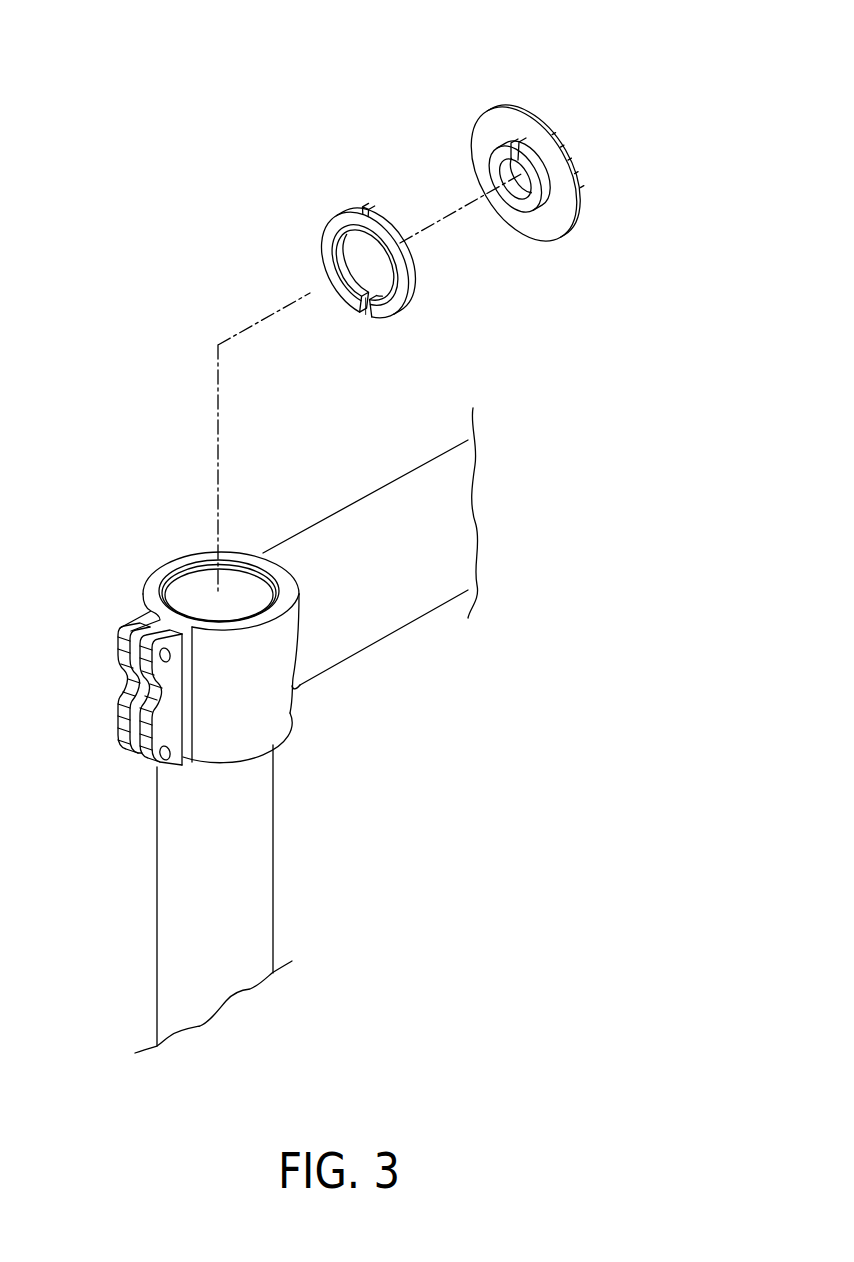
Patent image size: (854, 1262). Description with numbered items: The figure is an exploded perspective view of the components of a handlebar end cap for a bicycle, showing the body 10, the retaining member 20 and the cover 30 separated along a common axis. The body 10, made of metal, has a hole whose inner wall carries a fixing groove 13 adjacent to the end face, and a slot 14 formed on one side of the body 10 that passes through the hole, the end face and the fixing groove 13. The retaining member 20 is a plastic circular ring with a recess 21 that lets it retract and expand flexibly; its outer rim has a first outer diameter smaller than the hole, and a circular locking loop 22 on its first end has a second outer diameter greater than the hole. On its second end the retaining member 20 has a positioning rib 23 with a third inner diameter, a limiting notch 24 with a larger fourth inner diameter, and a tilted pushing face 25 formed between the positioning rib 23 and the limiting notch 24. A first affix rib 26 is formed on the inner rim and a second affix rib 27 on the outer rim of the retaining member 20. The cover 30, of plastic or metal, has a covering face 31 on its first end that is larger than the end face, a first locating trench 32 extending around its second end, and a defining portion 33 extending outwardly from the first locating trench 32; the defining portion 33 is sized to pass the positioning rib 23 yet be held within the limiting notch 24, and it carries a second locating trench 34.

The body 10 is at (299, 722).
The fixing groove 13 is at (187, 560).
The slot 14 is at (136, 657).
The retaining member 20 is at (352, 244).
The recess 21 is at (365, 306).
The locking loop 22 is at (385, 254).
The positioning rib 23 is at (374, 306).
The limiting notch 24 is at (364, 302).
The tilted pushing face 25 is at (365, 265).
The first affix rib 26 is at (364, 265).
The second affix rib 27 is at (368, 209).
The cover 30 is at (542, 138).
The covering face 31 is at (526, 172).
The first locating trench 32 is at (519, 176).
The defining portion 33 is at (515, 178).
The second locating trench 34 is at (518, 149).